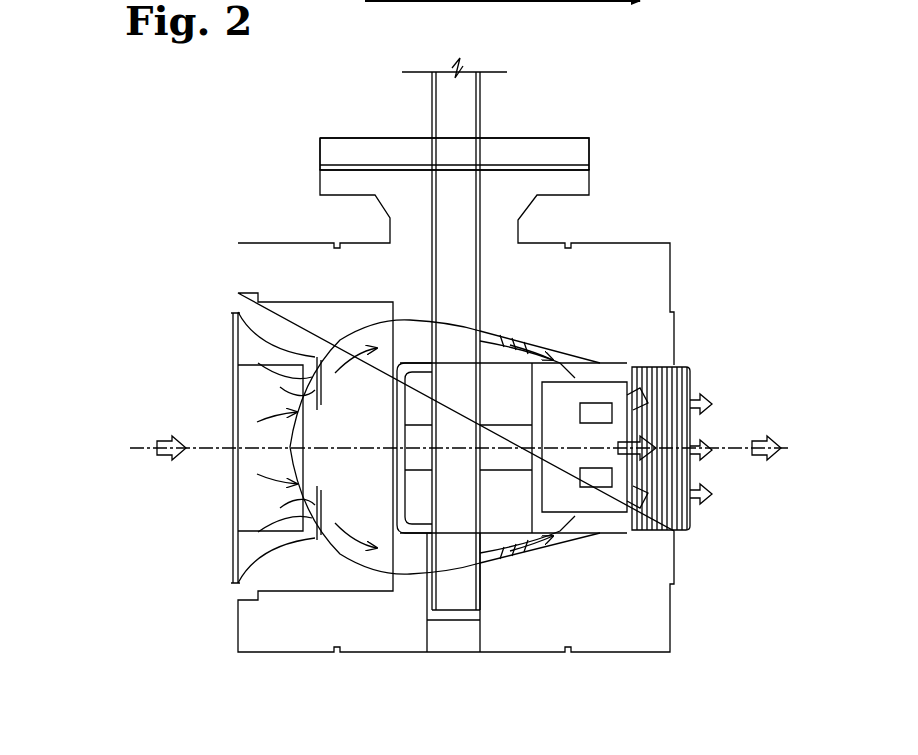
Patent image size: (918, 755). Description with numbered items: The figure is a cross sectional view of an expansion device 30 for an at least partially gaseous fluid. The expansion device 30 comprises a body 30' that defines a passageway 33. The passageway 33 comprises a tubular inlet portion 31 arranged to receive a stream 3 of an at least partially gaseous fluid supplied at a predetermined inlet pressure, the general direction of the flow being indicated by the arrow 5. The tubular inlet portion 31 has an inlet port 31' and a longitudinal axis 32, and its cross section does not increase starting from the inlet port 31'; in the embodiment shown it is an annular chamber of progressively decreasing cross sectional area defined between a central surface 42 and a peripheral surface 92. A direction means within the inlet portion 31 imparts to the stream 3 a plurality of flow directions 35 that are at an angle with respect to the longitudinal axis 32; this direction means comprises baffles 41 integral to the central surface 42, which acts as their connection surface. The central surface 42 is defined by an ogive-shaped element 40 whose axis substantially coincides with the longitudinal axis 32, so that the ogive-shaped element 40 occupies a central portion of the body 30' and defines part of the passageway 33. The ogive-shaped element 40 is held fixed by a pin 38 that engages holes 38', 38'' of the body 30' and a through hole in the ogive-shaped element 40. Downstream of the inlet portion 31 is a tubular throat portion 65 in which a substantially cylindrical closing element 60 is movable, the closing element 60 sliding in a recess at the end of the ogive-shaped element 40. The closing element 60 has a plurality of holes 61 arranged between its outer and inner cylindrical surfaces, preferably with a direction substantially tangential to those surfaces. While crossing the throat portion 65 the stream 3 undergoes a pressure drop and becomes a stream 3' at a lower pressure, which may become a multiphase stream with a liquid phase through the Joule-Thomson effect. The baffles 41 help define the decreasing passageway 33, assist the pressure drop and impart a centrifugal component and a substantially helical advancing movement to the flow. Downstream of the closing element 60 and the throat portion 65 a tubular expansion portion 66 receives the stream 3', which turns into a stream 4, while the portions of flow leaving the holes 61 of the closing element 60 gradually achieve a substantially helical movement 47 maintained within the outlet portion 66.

The stream 3 is at (153, 484).
The at least partially gaseous fluid stream 3' is at (607, 445).
The stream 4 is at (782, 458).
The flow direction arrow 5 is at (485, 0).
The expansion device 30 is at (379, 397).
The body 30' is at (523, 692).
The tubular inlet portion 31 is at (456, 395).
The inlet port 31' is at (199, 462).
The longitudinal axis 32 is at (118, 457).
The passageway 33 is at (276, 461).
The flow directions 35 is at (262, 422).
The pin 38 is at (417, 321).
The hole 38' is at (446, 127).
The hole 38'' is at (431, 625).
The ogive-shaped element 40 is at (327, 498).
The baffles 41 is at (314, 362).
The central surface 42 is at (317, 402).
The helical movement 47 is at (684, 368).
The closing element 60 is at (604, 507).
The holes 61 is at (601, 466).
The tubular throat portion 65 is at (575, 349).
The tubular expansion portion 66 is at (698, 404).
The peripheral surface 92 is at (300, 358).